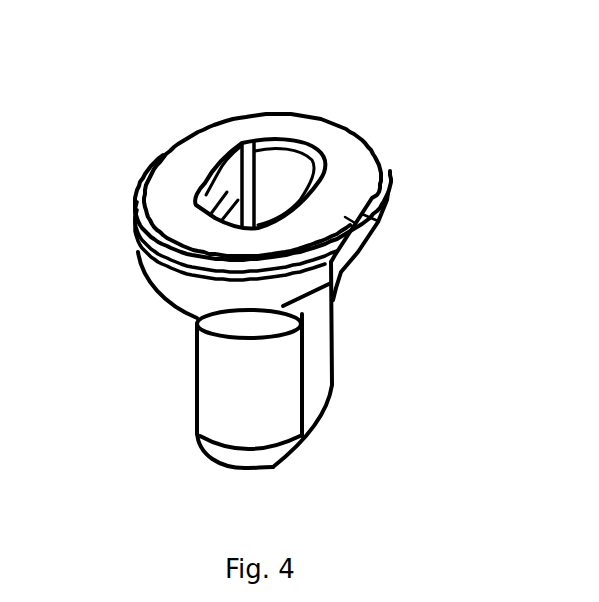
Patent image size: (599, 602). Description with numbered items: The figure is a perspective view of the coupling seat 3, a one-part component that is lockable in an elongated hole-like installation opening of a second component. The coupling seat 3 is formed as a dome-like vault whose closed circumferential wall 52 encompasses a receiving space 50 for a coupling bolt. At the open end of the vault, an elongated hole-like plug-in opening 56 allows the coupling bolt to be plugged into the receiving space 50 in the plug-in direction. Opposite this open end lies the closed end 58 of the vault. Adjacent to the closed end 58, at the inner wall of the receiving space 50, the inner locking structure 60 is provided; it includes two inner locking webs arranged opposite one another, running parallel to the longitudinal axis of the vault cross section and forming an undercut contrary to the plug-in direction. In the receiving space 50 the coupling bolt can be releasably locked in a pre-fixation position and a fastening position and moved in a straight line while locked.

The coupling seat 3 is at (512, 61).
The receiving space 50 is at (283, 173).
The closed circumferential wall 52 is at (317, 350).
The plug-in opening 56 is at (236, 141).
The closed end 58 is at (273, 466).
The inner locking structure 60 is at (205, 204).